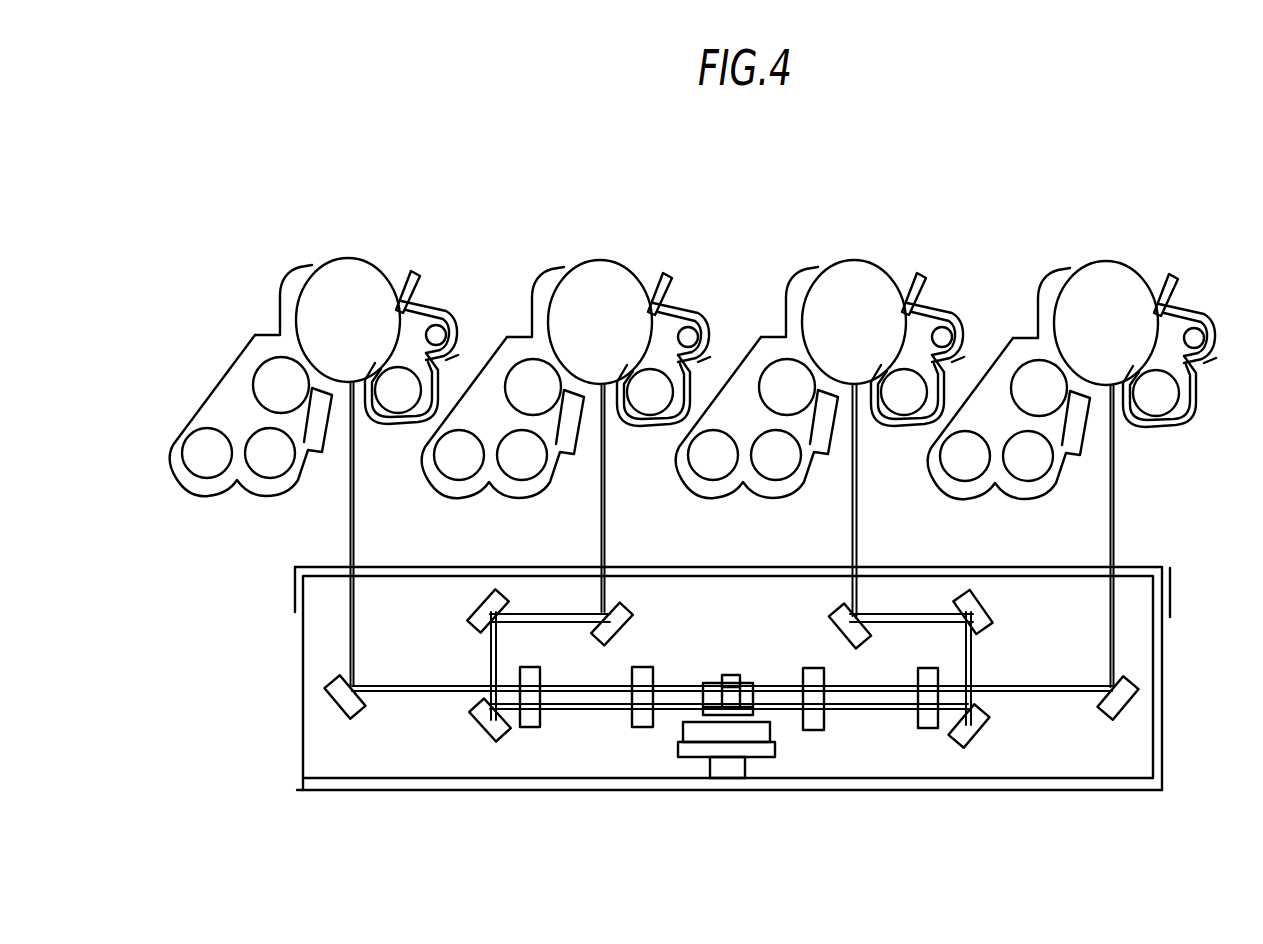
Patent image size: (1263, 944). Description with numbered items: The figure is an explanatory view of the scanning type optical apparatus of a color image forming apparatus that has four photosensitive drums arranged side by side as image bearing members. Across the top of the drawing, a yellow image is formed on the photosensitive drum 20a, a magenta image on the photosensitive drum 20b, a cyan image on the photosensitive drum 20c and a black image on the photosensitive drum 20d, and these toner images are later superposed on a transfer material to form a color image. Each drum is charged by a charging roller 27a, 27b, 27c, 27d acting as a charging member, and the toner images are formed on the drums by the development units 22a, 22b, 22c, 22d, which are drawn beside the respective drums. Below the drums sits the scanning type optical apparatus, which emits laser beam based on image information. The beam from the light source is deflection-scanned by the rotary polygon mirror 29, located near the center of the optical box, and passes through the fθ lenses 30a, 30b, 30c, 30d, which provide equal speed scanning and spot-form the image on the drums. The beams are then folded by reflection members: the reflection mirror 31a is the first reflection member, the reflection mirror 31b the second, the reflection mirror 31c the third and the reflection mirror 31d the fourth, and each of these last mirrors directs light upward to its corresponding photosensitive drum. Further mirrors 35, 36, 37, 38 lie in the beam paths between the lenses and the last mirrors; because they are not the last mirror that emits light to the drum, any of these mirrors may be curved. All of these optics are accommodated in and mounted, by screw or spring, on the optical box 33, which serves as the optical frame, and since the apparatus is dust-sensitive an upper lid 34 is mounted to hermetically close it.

The photosensitive drum 20a is at (1100, 285).
The photosensitive drum 20b is at (848, 282).
The photosensitive drum 20c is at (597, 282).
The photosensitive drum 20d is at (355, 282).
The development unit 22a is at (1030, 367).
The development unit 22b is at (775, 373).
The development unit 22c is at (522, 372).
The development unit 22d is at (267, 373).
The charging roller 27a is at (1160, 402).
The charging roller 27b is at (901, 408).
The charging roller 27c is at (648, 405).
The charging roller 27d is at (400, 400).
The rotary polygon mirror 29 is at (705, 692).
The fθ lens 30a is at (818, 731).
The fθ lens 30b is at (930, 731).
The fθ lens 30c is at (638, 728).
The fθ lens 30d is at (530, 728).
The reflection mirror 31a is at (1130, 708).
The reflection mirror 31b is at (836, 634).
The reflection mirror 31c is at (630, 630).
The reflection mirror 31d is at (353, 712).
The optical box 33 is at (488, 790).
The upper lid 34 is at (1164, 568).
The mirror 35 is at (988, 609).
The mirror 36 is at (977, 733).
The mirror 37 is at (473, 720).
The mirror 38 is at (480, 610).